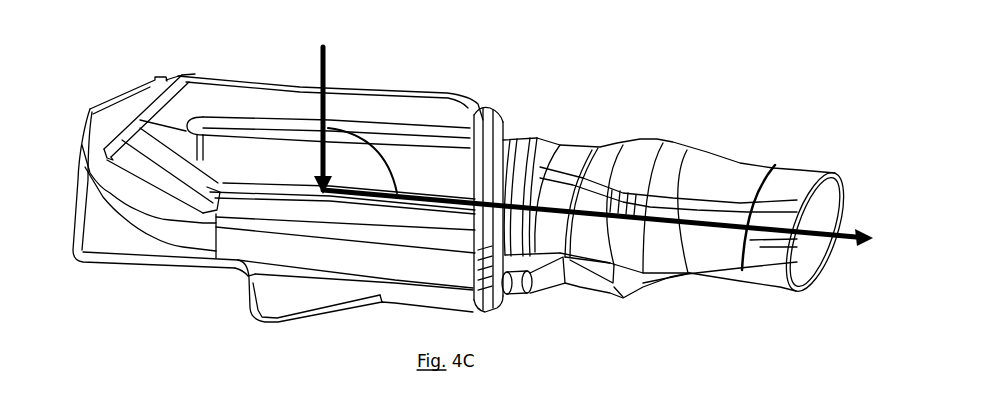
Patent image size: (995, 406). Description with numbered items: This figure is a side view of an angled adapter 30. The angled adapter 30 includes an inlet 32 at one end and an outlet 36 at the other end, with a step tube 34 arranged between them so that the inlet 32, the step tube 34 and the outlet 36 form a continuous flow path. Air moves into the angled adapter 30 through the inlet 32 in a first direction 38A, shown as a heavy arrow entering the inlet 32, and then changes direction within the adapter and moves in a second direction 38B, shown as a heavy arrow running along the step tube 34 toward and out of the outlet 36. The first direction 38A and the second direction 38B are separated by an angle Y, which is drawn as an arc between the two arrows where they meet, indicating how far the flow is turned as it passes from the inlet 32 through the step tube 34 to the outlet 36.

The angled adapter 30 is at (622, 41).
The inlet 32 is at (234, 124).
The step tube 34 is at (556, 128).
The outlet 36 is at (845, 277).
The first direction 38A is at (322, 83).
The second direction 38B is at (700, 212).
The angle Y is at (372, 140).